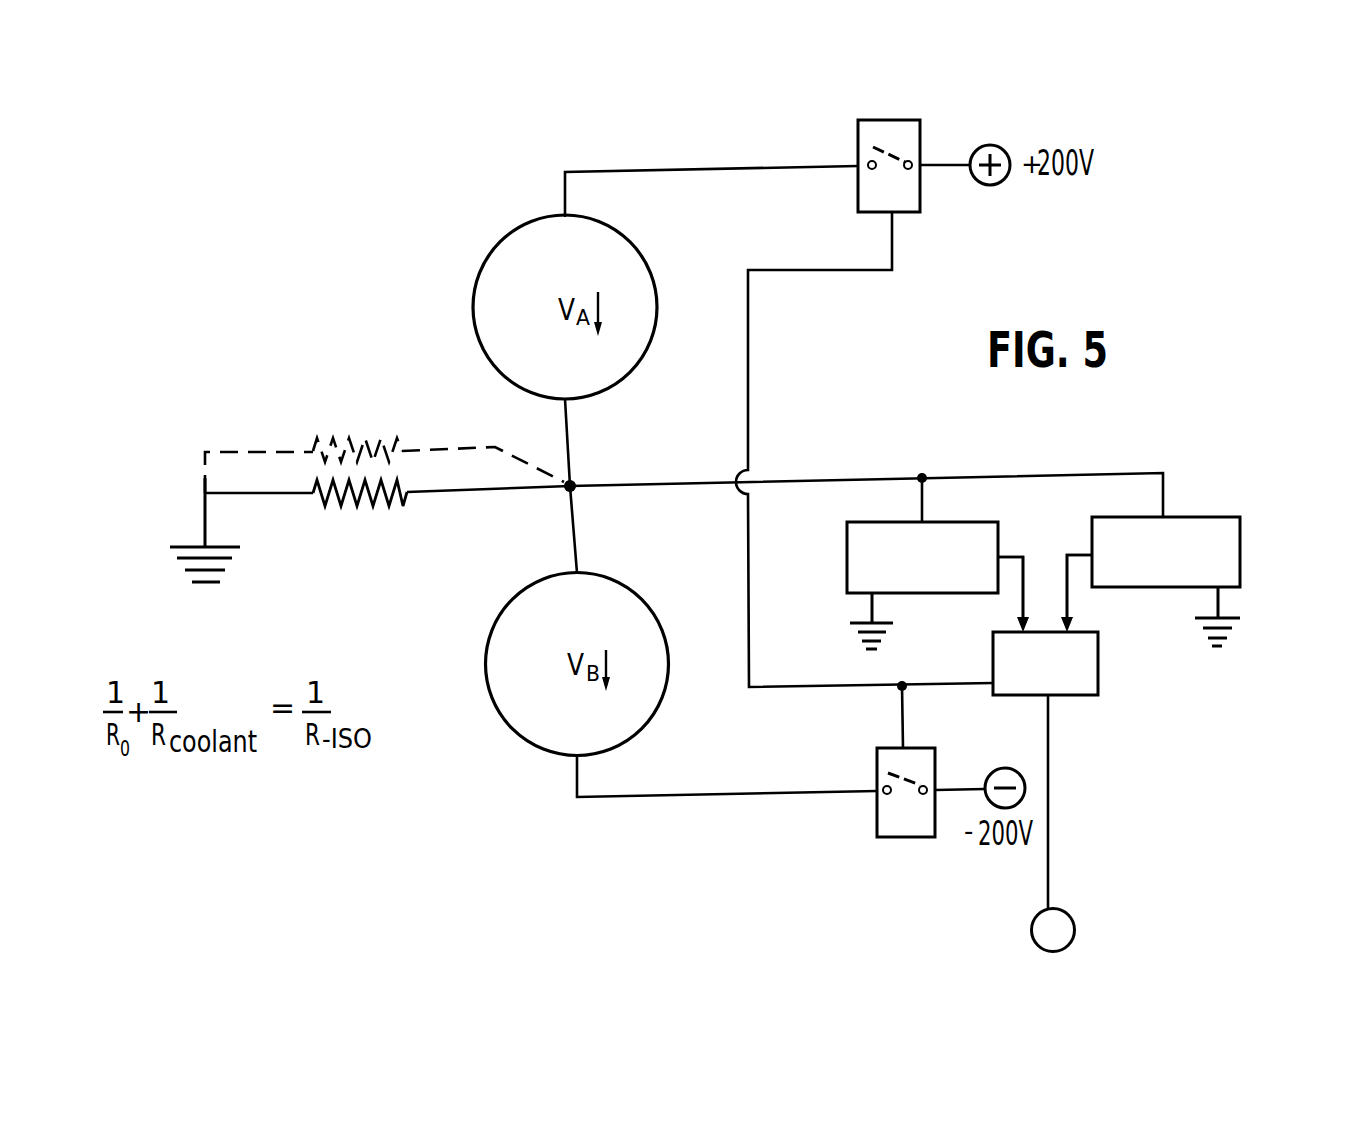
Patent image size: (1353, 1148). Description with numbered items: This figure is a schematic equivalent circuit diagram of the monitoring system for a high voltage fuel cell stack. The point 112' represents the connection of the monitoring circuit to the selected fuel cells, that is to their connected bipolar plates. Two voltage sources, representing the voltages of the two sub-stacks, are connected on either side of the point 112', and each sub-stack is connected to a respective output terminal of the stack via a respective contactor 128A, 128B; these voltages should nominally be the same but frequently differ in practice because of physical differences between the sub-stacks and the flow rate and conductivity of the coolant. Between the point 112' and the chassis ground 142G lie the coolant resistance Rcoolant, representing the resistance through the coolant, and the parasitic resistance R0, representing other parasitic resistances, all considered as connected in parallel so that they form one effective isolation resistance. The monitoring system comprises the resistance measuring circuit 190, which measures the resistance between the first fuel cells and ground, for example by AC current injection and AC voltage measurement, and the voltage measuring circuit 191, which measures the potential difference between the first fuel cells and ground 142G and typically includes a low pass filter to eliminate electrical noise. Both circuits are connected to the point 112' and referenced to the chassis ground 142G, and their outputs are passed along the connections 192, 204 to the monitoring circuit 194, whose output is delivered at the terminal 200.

The point 112' is at (602, 463).
The contactor 128A is at (913, 823).
The contactor 128B is at (891, 130).
The chassis ground 142G is at (204, 527).
The resistance measuring circuit 190 is at (858, 552).
The voltage measuring circuit 191 is at (1225, 545).
The signal line 192 is at (1020, 606).
The monitoring circuit 194 is at (1082, 672).
The output indicator 200 is at (1058, 932).
The signal line 204 is at (1069, 604).
The parasitic resistance R0 is at (346, 445).
The coolant resistance Rcoolant is at (347, 505).